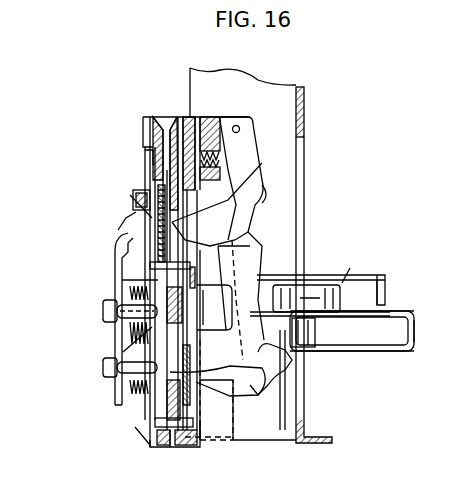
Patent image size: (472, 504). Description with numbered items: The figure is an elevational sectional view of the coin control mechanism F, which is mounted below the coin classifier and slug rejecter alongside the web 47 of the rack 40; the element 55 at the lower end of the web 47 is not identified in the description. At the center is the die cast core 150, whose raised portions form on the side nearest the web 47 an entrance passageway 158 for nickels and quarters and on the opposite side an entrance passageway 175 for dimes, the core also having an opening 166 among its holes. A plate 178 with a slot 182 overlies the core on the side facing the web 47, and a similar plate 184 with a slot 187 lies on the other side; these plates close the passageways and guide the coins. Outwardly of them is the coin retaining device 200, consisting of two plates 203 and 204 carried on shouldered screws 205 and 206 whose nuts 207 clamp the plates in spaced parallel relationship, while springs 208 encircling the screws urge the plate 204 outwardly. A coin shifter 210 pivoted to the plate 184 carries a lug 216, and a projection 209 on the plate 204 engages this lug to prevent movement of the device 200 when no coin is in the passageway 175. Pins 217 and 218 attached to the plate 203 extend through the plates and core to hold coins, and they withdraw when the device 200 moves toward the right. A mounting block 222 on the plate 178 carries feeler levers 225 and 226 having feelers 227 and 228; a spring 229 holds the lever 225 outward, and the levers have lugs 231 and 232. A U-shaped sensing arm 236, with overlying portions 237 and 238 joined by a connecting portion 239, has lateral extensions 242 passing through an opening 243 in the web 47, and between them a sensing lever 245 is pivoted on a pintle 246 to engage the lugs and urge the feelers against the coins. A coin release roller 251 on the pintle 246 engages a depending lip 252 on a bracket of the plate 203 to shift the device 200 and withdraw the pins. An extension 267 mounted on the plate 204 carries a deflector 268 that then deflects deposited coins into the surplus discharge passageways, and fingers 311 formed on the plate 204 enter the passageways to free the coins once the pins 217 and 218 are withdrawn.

The rack 40 is at (303, 87).
The web 47 is at (306, 114).
The base flange 55 is at (334, 441).
The die cast core 150 is at (146, 133).
The entrance passageway 158 is at (187, 117).
The opening 166 is at (172, 448).
The entrance passageway 175 is at (167, 120).
The plate 178 is at (196, 117).
The slot 182 is at (255, 172).
The plate 184 is at (143, 140).
The slot 187 is at (148, 428).
The coin retaining device 200 is at (113, 248).
The plate 203 is at (226, 441).
The plate 204 is at (118, 269).
The shouldered screw 205 is at (103, 311).
The shouldered screw 206 is at (104, 370).
The nuts 207 is at (110, 320).
The springs 208 is at (155, 421).
The projection 209 is at (117, 228).
The coin shifter 210 is at (150, 167).
The lug 216 is at (133, 218).
The pin 217 is at (193, 242).
The pin 218 is at (192, 447).
The mounting block 222 is at (207, 125).
The feeler lever 225 is at (255, 246).
The feeler lever 226 is at (265, 197).
The feeler 227 is at (224, 402).
The feeler 228 is at (236, 126).
The spring 229 is at (240, 132).
The lug 231 is at (283, 287).
The lug 232 is at (267, 372).
The sensing arm 236 is at (415, 322).
The overlying portion 237 is at (392, 353).
The overlying portion 238 is at (400, 312).
The connecting portion 239 is at (417, 338).
The lateral extensions 242 is at (381, 281).
The opening 243 is at (306, 152).
The sensing lever 245 is at (274, 380).
The pintle 246 is at (308, 356).
The coin release roller 251 is at (344, 280).
The depending lip 252 is at (387, 291).
The extension 267 is at (118, 340).
The deflector 268 is at (118, 285).
The fingers 311 is at (133, 202).
The coin control mechanism F is at (152, 447).